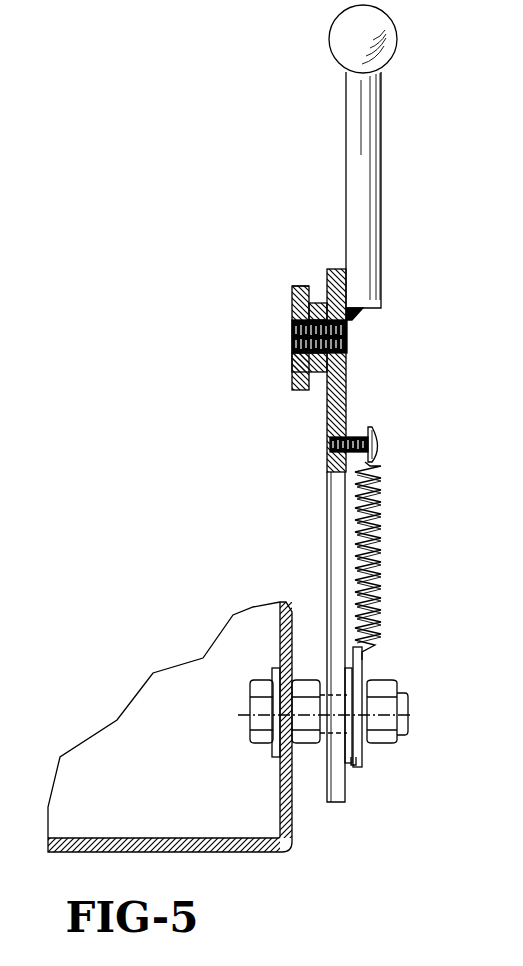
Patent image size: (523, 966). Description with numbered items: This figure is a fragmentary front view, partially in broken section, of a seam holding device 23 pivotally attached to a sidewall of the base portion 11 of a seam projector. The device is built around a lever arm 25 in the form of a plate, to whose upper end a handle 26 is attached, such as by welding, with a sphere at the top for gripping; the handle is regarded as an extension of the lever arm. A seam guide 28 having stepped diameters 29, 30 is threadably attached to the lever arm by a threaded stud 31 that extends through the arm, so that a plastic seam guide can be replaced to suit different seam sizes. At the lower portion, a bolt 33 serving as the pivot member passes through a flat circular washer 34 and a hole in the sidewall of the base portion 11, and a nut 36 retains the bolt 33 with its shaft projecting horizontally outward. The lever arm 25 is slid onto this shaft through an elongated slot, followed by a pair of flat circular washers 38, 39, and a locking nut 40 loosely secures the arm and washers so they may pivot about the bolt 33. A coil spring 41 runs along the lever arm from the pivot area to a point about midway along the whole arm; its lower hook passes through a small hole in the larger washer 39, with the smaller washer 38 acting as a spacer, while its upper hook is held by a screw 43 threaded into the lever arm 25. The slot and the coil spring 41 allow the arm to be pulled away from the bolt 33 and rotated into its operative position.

The base portion 11 is at (280, 845).
The seam holding device 23 is at (182, 230).
The lever arm 25 is at (335, 500).
The handle 26 is at (363, 182).
The seam guide 28 is at (293, 318).
The stepped diameter 29 is at (297, 287).
The stepped diameter 30 is at (317, 305).
The threaded stud 31 is at (350, 337).
The bolt 33 is at (260, 740).
The flat circular washer 34 is at (277, 668).
The nut 36 is at (310, 687).
The flat circular washer 38 is at (347, 763).
The flat circular washer 39 is at (367, 757).
The locking nut 40 is at (403, 662).
The coil spring 41 is at (382, 570).
The screw 43 is at (362, 433).